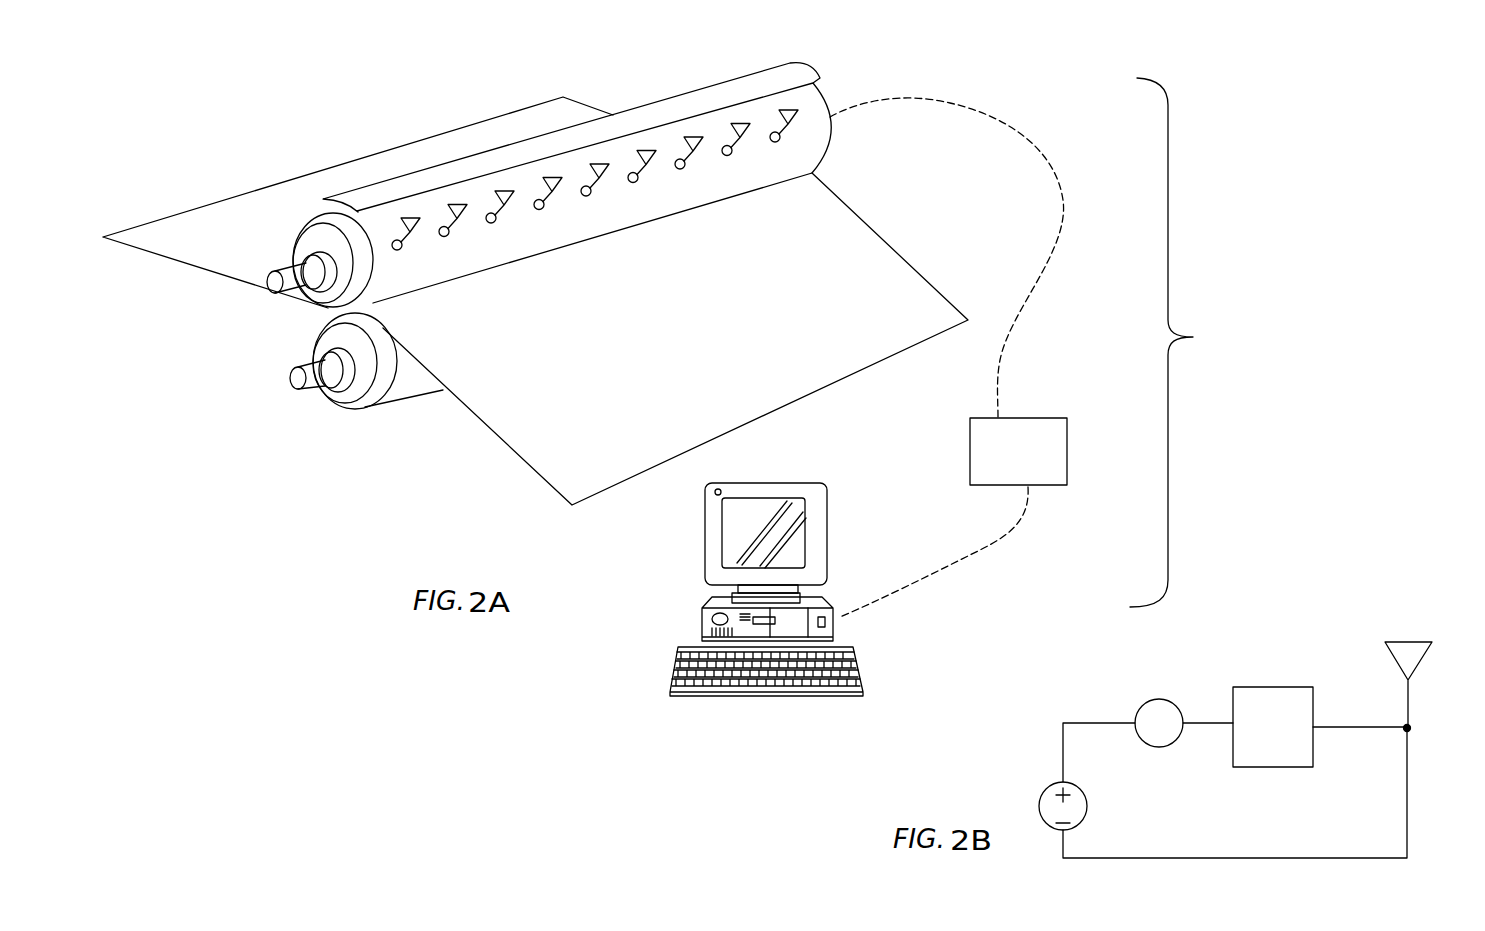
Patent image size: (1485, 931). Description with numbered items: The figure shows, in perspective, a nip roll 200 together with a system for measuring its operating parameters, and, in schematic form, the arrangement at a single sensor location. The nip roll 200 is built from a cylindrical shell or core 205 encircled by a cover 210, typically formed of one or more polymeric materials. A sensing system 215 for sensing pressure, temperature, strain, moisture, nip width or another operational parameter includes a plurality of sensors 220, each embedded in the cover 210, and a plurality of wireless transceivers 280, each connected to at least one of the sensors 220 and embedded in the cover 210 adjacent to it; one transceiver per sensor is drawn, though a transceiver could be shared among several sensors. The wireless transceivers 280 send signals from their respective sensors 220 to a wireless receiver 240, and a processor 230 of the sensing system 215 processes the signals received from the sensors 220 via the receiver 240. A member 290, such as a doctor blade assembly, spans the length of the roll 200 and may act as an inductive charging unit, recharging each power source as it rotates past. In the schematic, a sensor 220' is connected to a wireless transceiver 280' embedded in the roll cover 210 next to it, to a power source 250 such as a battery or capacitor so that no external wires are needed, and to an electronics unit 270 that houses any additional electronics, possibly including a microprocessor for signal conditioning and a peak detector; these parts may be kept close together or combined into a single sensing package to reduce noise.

In FIG. 2A, the nip roll 200 is at (819, 92).
In FIG. 2A, the cylindrical shell or core 205 is at (347, 242).
In FIG. 2A, the cover 210 is at (323, 218).
In FIG. 2A, the sensing system 215 is at (1183, 342).
In FIG. 2A, the sensors 220 is at (653, 191).
In FIG. 2A, the processor 230 is at (693, 620).
In FIG. 2A, the wireless receiver 240 is at (1067, 443).
In FIG. 2A, the wireless transceivers 280 is at (599, 132).
In FIG. 2A, the charging unit member 290 is at (482, 160).
In FIG. 2B, the sensor 220' is at (1150, 699).
In FIG. 2B, the power source 250 is at (1037, 803).
In FIG. 2B, the electronics unit 270 is at (1262, 687).
In FIG. 2B, the wireless transceiver 280' is at (1426, 687).